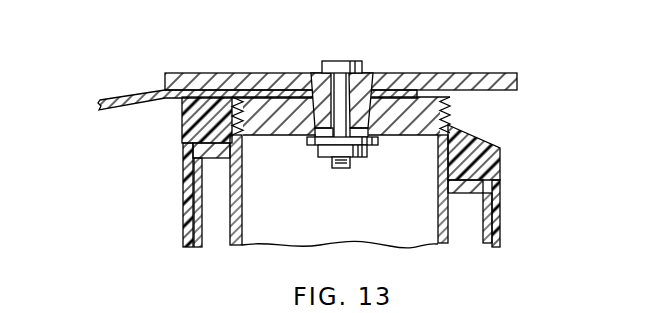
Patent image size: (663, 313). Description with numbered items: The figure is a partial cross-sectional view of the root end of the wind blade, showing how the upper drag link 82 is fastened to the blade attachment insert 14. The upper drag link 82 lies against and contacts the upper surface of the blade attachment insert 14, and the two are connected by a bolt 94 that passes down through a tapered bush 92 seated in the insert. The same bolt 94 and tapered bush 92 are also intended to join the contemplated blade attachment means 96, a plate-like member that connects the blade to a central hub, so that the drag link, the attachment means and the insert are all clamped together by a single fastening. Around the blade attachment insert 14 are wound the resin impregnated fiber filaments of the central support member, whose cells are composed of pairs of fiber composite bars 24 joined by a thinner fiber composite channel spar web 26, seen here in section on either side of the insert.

The blade attachment insert 14 is at (238, 233).
The fiber composite bars 24 is at (186, 124).
The fiber composite channel spar web 26 is at (197, 207).
The upper drag link 82 is at (130, 98).
The tapered bush 92 is at (362, 90).
The bolt 94 is at (342, 68).
The blade attachment means 96 is at (443, 83).